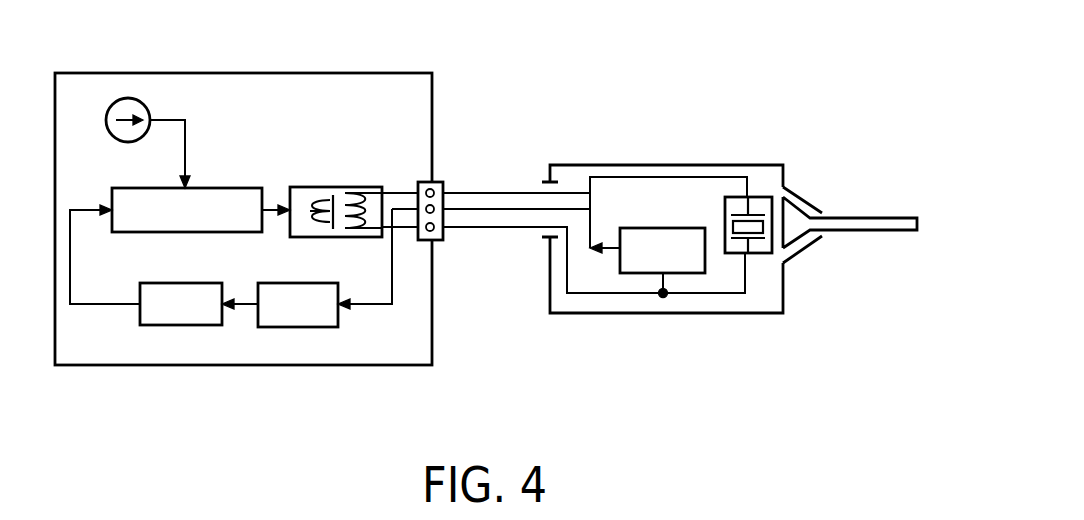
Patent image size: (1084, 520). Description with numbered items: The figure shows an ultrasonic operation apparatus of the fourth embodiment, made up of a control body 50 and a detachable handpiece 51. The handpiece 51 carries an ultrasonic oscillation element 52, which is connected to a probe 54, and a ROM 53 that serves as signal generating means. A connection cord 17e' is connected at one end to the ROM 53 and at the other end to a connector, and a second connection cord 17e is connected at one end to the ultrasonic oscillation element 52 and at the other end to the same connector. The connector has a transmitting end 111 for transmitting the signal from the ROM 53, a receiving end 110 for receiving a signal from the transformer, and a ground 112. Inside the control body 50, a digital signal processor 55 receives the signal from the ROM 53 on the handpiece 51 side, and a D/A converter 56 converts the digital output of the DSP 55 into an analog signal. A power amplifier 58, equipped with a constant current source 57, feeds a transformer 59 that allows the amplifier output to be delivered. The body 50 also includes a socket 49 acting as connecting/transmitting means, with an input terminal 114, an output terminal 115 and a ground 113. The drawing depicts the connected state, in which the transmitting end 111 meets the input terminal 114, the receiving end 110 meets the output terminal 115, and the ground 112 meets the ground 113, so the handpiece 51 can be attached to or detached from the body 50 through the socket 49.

The control body 50 is at (306, 73).
The constant current source 57 is at (150, 117).
The power amplifier 58 is at (216, 187).
The transformer 59 is at (305, 187).
The D/A converter 56 is at (155, 325).
The digital signal processor 55 is at (277, 327).
The socket 49 is at (440, 182).
The output terminal 115 is at (428, 183).
The input terminal 114 is at (418, 196).
The ground 113 is at (430, 240).
The ground 112 is at (441, 236).
The transmitting end 111 is at (445, 209).
The receiving end 110 is at (445, 195).
The connection cord 17e is at (521, 172).
The connection cord 17e' is at (521, 163).
The handpiece 51 is at (638, 165).
The ROM 53 is at (660, 228).
The ultrasonic oscillation element 52 is at (758, 197).
The probe 54 is at (866, 218).